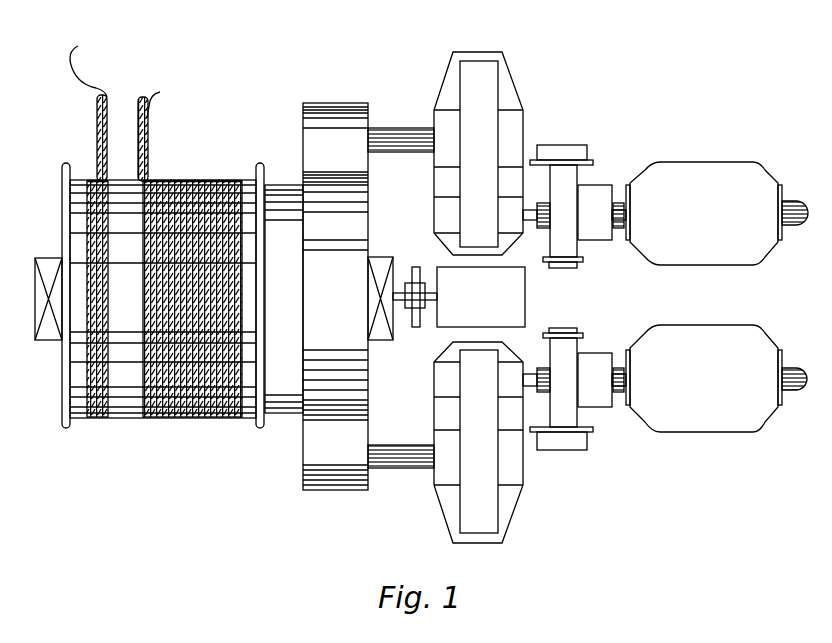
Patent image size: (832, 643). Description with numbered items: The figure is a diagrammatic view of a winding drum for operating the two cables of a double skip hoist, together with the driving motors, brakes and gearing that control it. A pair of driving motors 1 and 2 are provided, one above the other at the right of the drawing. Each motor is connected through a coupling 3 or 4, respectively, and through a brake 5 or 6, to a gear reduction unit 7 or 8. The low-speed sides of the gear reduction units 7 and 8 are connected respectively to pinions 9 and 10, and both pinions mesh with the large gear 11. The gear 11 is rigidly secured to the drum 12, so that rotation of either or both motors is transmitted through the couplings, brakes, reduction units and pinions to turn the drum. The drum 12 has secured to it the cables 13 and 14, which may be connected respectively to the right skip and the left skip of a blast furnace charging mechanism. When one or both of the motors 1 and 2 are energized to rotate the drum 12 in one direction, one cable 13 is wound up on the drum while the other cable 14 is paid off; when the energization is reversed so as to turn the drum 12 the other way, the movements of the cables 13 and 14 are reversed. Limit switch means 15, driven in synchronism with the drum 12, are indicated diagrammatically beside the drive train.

The driving motor 1 is at (762, 420).
The driving motor 2 is at (748, 162).
The coupling 3 is at (602, 343).
The coupling 4 is at (598, 240).
The brake 5 is at (563, 328).
The brake 6 is at (565, 270).
The gear reduction unit 7 is at (512, 520).
The gear reduction unit 8 is at (517, 90).
The pinion 9 is at (342, 291).
The pinion 10 is at (368, 112).
The gear 11 is at (368, 382).
The drum 12 is at (132, 420).
The cable 13 is at (148, 150).
The cable 14 is at (97, 141).
The limit switch means 15 is at (444, 272).